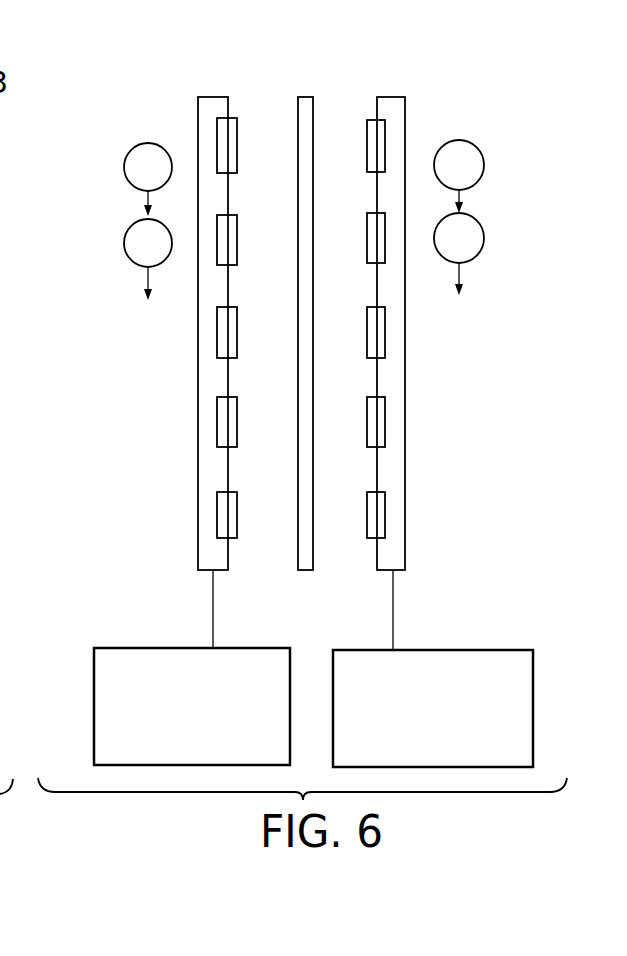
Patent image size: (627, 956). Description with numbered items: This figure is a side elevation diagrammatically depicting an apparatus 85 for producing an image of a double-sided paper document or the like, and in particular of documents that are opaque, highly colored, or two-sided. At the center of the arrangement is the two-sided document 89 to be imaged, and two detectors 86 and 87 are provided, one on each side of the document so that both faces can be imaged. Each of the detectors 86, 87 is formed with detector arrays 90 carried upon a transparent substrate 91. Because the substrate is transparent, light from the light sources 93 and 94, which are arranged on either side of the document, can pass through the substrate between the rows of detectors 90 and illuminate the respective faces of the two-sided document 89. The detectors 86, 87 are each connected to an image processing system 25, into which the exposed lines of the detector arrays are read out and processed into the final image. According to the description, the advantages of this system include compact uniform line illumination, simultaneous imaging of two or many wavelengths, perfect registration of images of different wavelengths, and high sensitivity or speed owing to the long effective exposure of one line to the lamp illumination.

The image processing system 25 is at (94, 712).
The apparatus 85 is at (143, 128).
The detector 86 is at (220, 96).
The detector 87 is at (390, 96).
The two-sided document 89 is at (306, 572).
The detector arrays 90 is at (237, 333).
The transparent substrate 91 is at (203, 572).
The light source 93 is at (110, 208).
The light source 94 is at (497, 196).